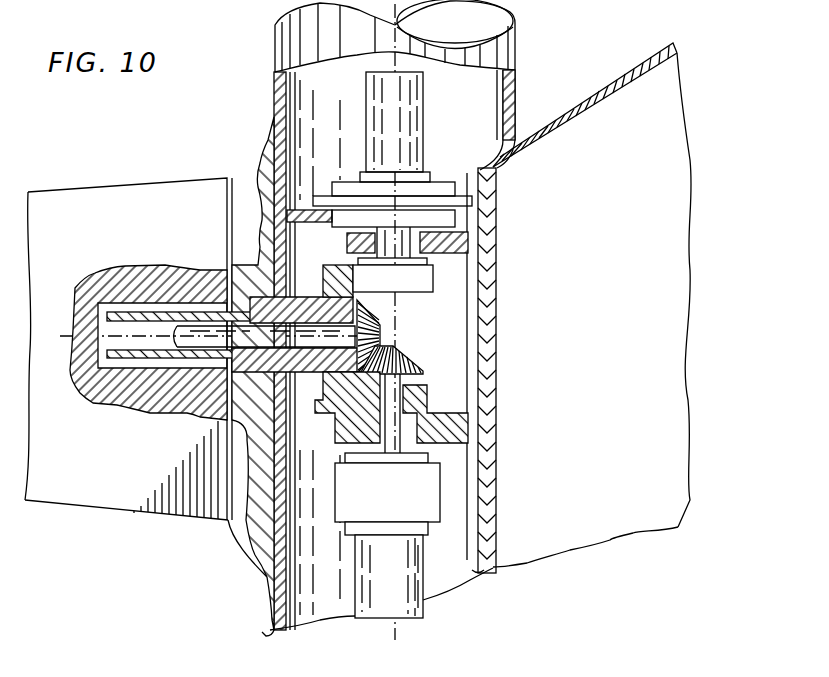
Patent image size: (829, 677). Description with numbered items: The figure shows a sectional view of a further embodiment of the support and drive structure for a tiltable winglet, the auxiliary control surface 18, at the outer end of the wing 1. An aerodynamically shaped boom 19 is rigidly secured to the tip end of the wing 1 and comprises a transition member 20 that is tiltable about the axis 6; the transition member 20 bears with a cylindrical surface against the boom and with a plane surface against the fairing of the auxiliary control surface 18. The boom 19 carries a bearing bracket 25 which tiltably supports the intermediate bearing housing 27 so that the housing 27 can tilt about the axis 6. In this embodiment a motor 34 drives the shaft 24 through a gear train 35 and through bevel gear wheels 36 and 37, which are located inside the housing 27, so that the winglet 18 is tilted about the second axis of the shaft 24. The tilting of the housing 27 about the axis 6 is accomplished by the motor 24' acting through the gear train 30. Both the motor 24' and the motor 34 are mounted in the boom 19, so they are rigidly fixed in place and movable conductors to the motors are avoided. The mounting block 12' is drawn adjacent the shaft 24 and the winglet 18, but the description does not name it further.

The wing 1 is at (631, 160).
The axis 6 is at (391, 620).
The mounting block 12' is at (163, 355).
The auxiliary control surface 18 is at (97, 195).
The boom 19 is at (513, 40).
The transition member 20 is at (253, 163).
The shaft 24 is at (265, 367).
The motor 24' is at (417, 165).
The bearing bracket 25 is at (347, 243).
The intermediate bearing housing 27 is at (330, 405).
The gear train 30 is at (344, 181).
The motor 34 is at (356, 582).
The gear train 35 is at (345, 492).
The bevel gear wheel 36 is at (413, 355).
The bevel gear wheel 37 is at (374, 313).